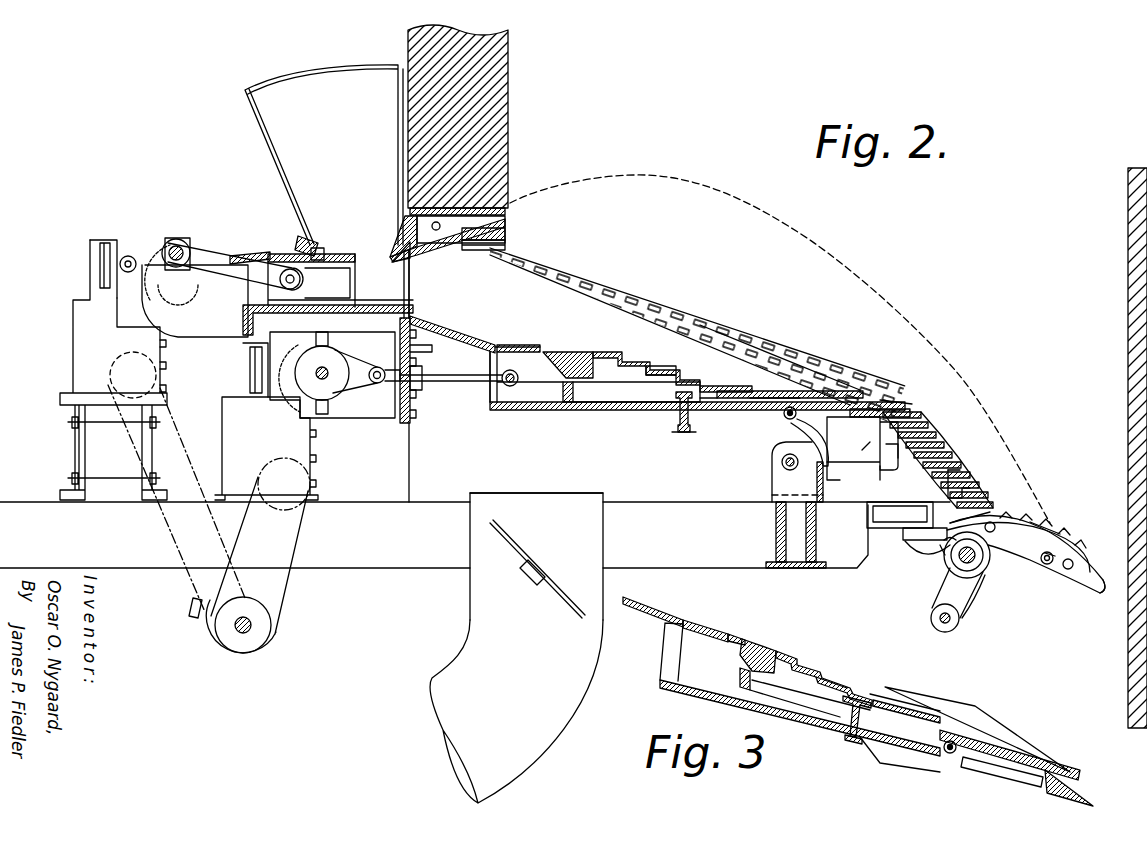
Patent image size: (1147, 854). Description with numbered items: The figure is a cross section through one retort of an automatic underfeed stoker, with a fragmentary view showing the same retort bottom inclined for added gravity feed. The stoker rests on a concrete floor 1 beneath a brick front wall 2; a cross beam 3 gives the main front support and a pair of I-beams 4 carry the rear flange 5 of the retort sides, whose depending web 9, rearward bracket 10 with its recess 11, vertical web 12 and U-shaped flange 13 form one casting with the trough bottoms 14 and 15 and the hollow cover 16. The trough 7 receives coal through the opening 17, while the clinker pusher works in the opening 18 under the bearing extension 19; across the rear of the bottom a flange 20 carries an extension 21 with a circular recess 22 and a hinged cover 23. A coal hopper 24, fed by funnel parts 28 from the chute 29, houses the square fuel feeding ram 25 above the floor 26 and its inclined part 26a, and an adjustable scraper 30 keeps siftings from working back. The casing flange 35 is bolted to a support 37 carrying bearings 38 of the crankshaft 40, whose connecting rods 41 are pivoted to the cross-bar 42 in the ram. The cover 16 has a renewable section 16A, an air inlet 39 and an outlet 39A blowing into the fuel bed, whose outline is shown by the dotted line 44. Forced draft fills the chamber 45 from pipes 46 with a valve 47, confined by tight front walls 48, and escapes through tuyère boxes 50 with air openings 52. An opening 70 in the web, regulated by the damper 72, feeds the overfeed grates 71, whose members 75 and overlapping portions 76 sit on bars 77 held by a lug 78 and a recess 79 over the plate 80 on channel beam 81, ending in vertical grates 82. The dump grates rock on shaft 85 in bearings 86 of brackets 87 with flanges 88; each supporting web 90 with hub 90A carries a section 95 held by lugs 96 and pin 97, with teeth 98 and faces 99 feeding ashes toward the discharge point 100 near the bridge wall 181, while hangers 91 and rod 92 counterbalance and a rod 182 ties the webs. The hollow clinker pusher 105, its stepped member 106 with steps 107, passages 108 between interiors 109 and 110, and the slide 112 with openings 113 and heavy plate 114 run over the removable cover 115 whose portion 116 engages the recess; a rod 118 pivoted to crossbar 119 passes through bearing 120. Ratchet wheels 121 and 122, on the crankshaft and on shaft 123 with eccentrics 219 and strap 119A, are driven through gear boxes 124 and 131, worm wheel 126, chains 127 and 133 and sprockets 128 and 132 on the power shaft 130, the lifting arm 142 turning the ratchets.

In FIG. 2, the floor or foundation 1 is at (414, 556).
In FIG. 2, the front wall 2 is at (497, 94).
In FIG. 2, the cross beam 3 is at (400, 430).
In FIG. 2, the I-beams 4 is at (790, 569).
In FIG. 2, the flange or foot 5 is at (772, 498).
In FIG. 2, the trough or retort 7 is at (517, 314).
In FIG. 2, the depending web 9 is at (771, 476).
In FIG. 2, the rearwardly extending bracket 10 is at (855, 465).
In FIG. 2, the recess 11 is at (898, 464).
In FIG. 2, the vertical brace or web 12 is at (816, 433).
In FIG. 3, the vertical brace or web 12 is at (956, 740).
In FIG. 2, the U-shaped flange 13 is at (412, 355).
In FIG. 2, the trough bottom 14 is at (452, 340).
In FIG. 3, the trough bottom 14 is at (645, 605).
In FIG. 2, the trough bottom 15 is at (570, 411).
In FIG. 3, the trough bottom 15 is at (796, 705).
In FIG. 2, the cap or cover 16 is at (470, 250).
In FIG. 2, the removable forward section 16A is at (508, 233).
In FIG. 2, the opening 17 is at (413, 277).
In FIG. 2, the opening 18 is at (497, 394).
In FIG. 2, the bearing extension 19 is at (523, 343).
In FIG. 3, the bearing extension 19 is at (712, 630).
In FIG. 2, the flange 20 is at (683, 425).
In FIG. 2, the extension 21 is at (733, 411).
In FIG. 2, the circular recess 22 is at (786, 418).
In FIG. 3, the circular recess 22 is at (949, 756).
In FIG. 2, the cover or top 23 is at (852, 422).
In FIG. 2, the coal hopper 24 is at (276, 250).
In FIG. 2, the fuel feeding ram 25 is at (333, 254).
In FIG. 2, the hopper floor 26 is at (354, 310).
In FIG. 2, the inclined floor portion 26a is at (388, 294).
In FIG. 2, the funnel parts 28 is at (297, 235).
In FIG. 2, the coal receiving chute 29 is at (286, 132).
In FIG. 2, the U-shaped scraper 30 is at (319, 247).
In FIG. 2, the flange 35 is at (256, 326).
In FIG. 2, the support 37 is at (240, 298).
In FIG. 2, the bearings 38 is at (178, 297).
In FIG. 2, the air receiving inlet 39 is at (406, 238).
In FIG. 2, the downwardly directed outlet 39A is at (510, 217).
In FIG. 2, the crankshaft 40 is at (170, 240).
In FIG. 2, the connecting rods 41 is at (213, 255).
In FIG. 2, the cross-bar 42 is at (357, 267).
In FIG. 2, the fuel bed line 44 is at (775, 224).
In FIG. 2, the air chamber 45 is at (536, 466).
In FIG. 2, the pipes 46 is at (455, 765).
In FIG. 2, the controlling valve 47 is at (556, 600).
In FIG. 2, the front walls 48 is at (410, 477).
In FIG. 2, the tuyère boxes 50 is at (603, 270).
In FIG. 2, the air openings 52 is at (700, 313).
In FIG. 2, the opening 70 is at (817, 465).
In FIG. 2, the overfeed grates 71 is at (966, 445).
In FIG. 3, the overfeed grates 71 is at (1090, 795).
In FIG. 2, the damper 72 is at (800, 427).
In FIG. 2, the horizontally extending members 75 is at (906, 418).
In FIG. 2, the rearwardly and upwardly extending portion 76 is at (958, 484).
In FIG. 2, the supporting bars 77 is at (873, 456).
In FIG. 2, the depending lug 78 is at (889, 468).
In FIG. 2, the recess 79 is at (965, 500).
In FIG. 2, the plate 80 is at (985, 556).
In FIG. 2, the channel beam 81 is at (893, 530).
In FIG. 2, the vertical grates 82 is at (993, 513).
In FIG. 2, the shaft 85 is at (977, 580).
In FIG. 2, the bearings 86 is at (947, 560).
In FIG. 2, the brackets 87 is at (933, 566).
In FIG. 2, the flanges 88 is at (927, 540).
In FIG. 2, the supporting web 90 is at (1023, 553).
In FIG. 2, the offset portion or hub 90A is at (927, 567).
In FIG. 2, the hanger 91 is at (963, 598).
In FIG. 2, the rod 92 is at (946, 626).
In FIG. 2, the grate sections 95 is at (1048, 524).
In FIG. 2, the depending lugs 96 is at (991, 530).
In FIG. 2, the cotter pin or bolt 97 is at (994, 522).
In FIG. 2, the teeth 98 is at (1040, 513).
In FIG. 2, the perpendicular lower faces 99 is at (1050, 512).
In FIG. 2, the discharge point 100 is at (1100, 592).
In FIG. 2, the clinker piston or pusher 105 is at (559, 355).
In FIG. 3, the clinker piston or pusher 105 is at (745, 646).
In FIG. 2, the member 106 is at (606, 357).
In FIG. 3, the member 106 is at (790, 656).
In FIG. 2, the steps 107 is at (647, 375).
In FIG. 3, the steps 107 is at (828, 678).
In FIG. 2, the air passages 108 is at (575, 392).
In FIG. 3, the air passages 108 is at (753, 693).
In FIG. 2, the interior of pusher 109 is at (526, 377).
In FIG. 3, the interior of pusher 109 is at (691, 652).
In FIG. 2, the interior of member 110 is at (627, 404).
In FIG. 3, the interior of member 110 is at (811, 693).
In FIG. 2, the slide 112 is at (742, 370).
In FIG. 2, the air openings 113 is at (675, 393).
In FIG. 3, the air openings 113 is at (842, 722).
In FIG. 2, the heavy plate 114 is at (866, 407).
In FIG. 3, the heavy plate 114 is at (1000, 736).
In FIG. 2, the removable cover 115 is at (906, 402).
In FIG. 3, the removable cover 115 is at (1050, 762).
In FIG. 2, the downward portion 116 is at (753, 410).
In FIG. 3, the downward portion 116 is at (953, 750).
In FIG. 2, the rod 118 is at (469, 374).
In FIG. 2, the crossbar 119 is at (508, 368).
In FIG. 2, the strap 119A is at (360, 390).
In FIG. 2, the bearing 120 is at (421, 383).
In FIG. 2, the ratchet wheel 121 is at (152, 252).
In FIG. 2, the ratchet wheel 122 is at (275, 403).
In FIG. 2, the shaft 123 is at (328, 402).
In FIG. 2, the gear box 124 is at (113, 370).
In FIG. 2, the worm wheel 126 is at (108, 374).
In FIG. 2, the chain 127 is at (196, 612).
In FIG. 2, the sprocket wheel 128 is at (223, 634).
In FIG. 2, the power shaft 130 is at (243, 640).
In FIG. 2, the gear box 131 is at (222, 432).
In FIG. 2, the sprocket wheel 132 is at (303, 500).
In FIG. 2, the sprocket chain 133 is at (290, 596).
In FIG. 2, the arm 142 is at (98, 238).
In FIG. 2, the bridge wall 181 is at (1126, 282).
In FIG. 2, the rod 182 is at (1050, 573).
In FIG. 2, the eccentrics 219 is at (332, 375).